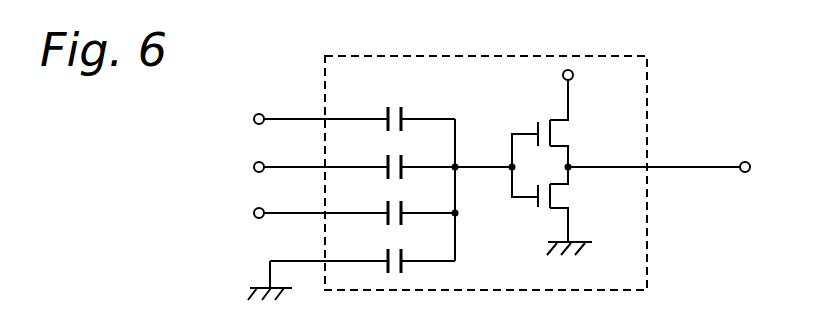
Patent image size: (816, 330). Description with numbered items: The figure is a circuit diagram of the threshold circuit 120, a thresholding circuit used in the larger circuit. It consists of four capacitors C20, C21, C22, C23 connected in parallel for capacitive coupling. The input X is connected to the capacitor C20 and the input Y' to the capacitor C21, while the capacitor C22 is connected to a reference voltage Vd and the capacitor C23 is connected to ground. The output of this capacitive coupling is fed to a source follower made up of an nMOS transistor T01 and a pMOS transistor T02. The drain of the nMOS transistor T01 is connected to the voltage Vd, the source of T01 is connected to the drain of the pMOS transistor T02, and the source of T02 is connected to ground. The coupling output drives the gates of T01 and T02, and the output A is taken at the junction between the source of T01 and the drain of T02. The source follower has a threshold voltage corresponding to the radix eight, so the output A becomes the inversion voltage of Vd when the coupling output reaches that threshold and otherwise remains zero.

The threshold circuit 120 is at (647, 80).
The capacitor C20 is at (399, 110).
The capacitor C21 is at (399, 158).
The capacitor C22 is at (399, 204).
The capacitor C23 is at (399, 252).
The nMOS transistor T01 is at (573, 114).
The pMOS transistor T02 is at (573, 211).